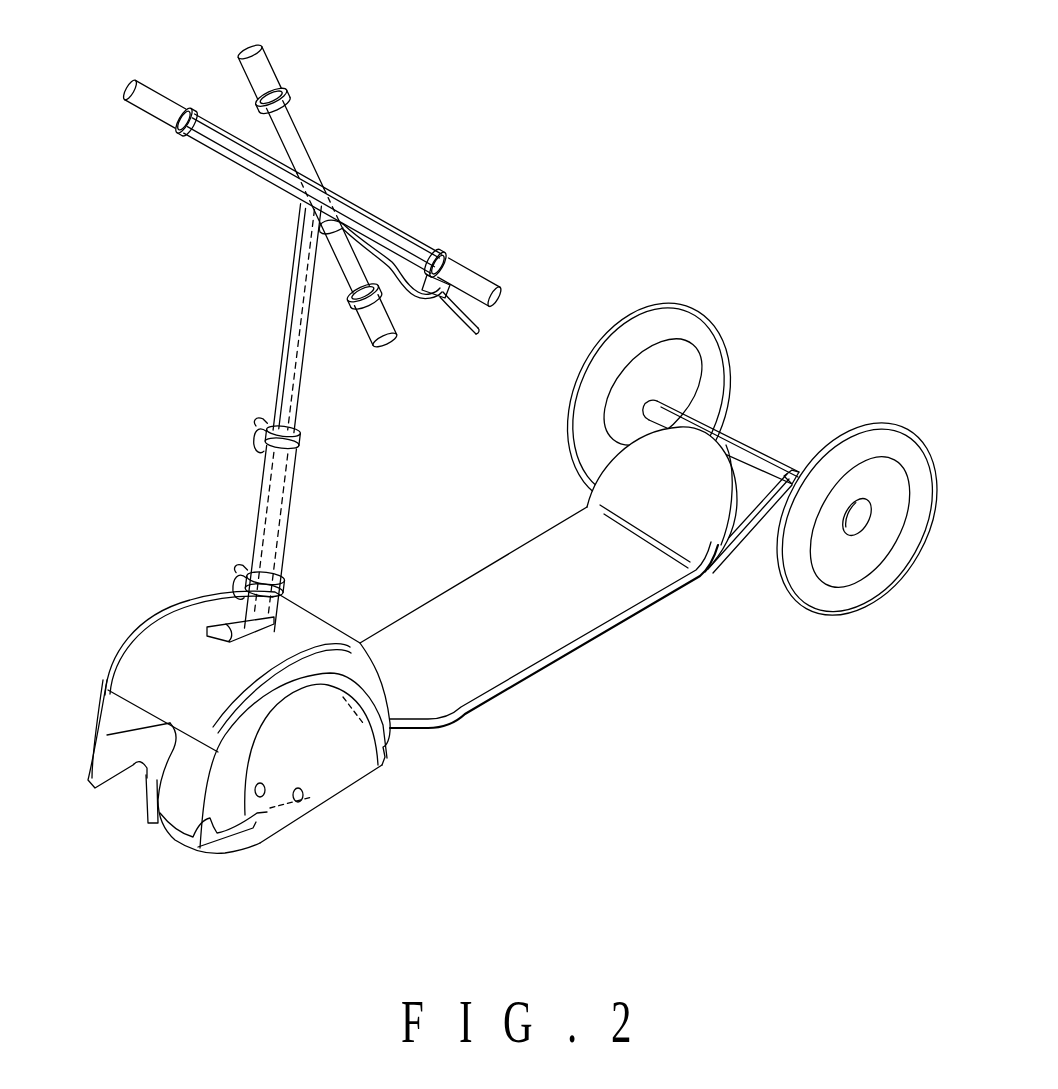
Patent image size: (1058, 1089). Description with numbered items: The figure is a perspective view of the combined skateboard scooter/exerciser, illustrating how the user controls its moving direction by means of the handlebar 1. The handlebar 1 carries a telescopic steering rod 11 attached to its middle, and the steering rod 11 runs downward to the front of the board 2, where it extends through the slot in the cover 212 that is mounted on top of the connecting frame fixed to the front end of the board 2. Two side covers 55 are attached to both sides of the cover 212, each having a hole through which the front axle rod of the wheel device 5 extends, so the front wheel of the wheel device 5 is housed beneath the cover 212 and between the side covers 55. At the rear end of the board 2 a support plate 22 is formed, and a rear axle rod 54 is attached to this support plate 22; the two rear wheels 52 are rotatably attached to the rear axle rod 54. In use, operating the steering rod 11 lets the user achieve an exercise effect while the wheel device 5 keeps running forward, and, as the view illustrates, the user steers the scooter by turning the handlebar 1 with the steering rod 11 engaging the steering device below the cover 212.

The handlebar 1 is at (373, 227).
The telescopic steering rod 11 is at (277, 513).
The board 2 is at (607, 637).
The cover 212 is at (303, 637).
The support plate 22 is at (630, 553).
The wheel device 5 is at (237, 857).
The rear wheels 52 is at (843, 597).
The rear axle rod 54 is at (752, 463).
The side covers 55 is at (323, 767).